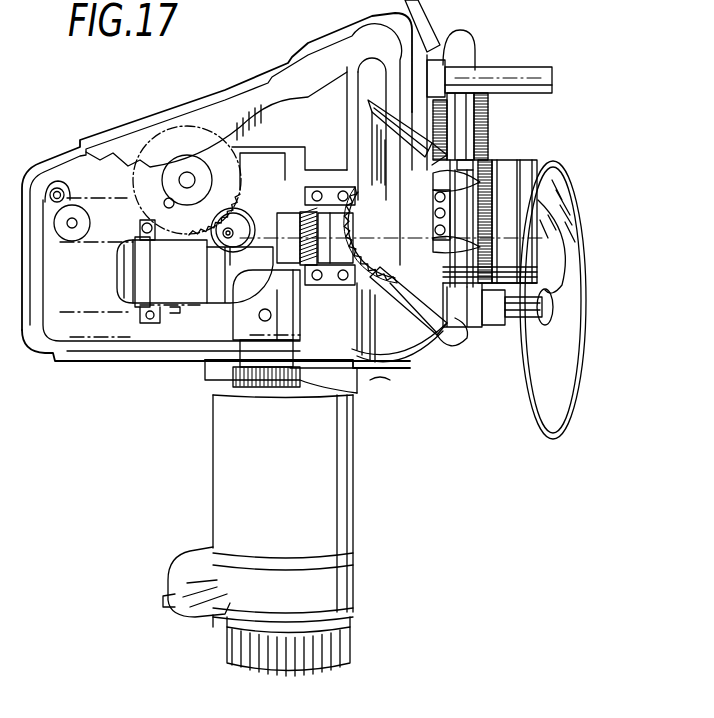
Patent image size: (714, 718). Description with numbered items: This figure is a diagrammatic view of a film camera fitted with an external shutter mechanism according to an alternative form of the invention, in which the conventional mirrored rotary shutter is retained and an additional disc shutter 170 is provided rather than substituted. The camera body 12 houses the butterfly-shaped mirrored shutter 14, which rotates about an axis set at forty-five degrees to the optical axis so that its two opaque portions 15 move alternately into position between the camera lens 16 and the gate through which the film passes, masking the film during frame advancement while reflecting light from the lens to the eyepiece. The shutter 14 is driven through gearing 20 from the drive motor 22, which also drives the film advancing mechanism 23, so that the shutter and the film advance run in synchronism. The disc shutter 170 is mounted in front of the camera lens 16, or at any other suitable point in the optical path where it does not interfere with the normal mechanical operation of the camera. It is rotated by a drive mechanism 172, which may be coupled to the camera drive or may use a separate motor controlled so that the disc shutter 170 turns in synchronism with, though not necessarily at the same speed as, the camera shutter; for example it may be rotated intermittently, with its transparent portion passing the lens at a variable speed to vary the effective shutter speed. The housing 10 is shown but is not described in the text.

The housing plate 10 is at (236, 95).
The camera body 12 is at (210, 327).
The mirrored shutter 14 is at (400, 330).
The opaque portions 15 is at (478, 80).
The camera lens 16 is at (507, 167).
The gearing 20 is at (318, 275).
The drive motor 22 is at (185, 292).
The film advancing mechanism 23 is at (178, 165).
The disc shutter 170 is at (563, 372).
The drive mechanism 172 is at (490, 310).